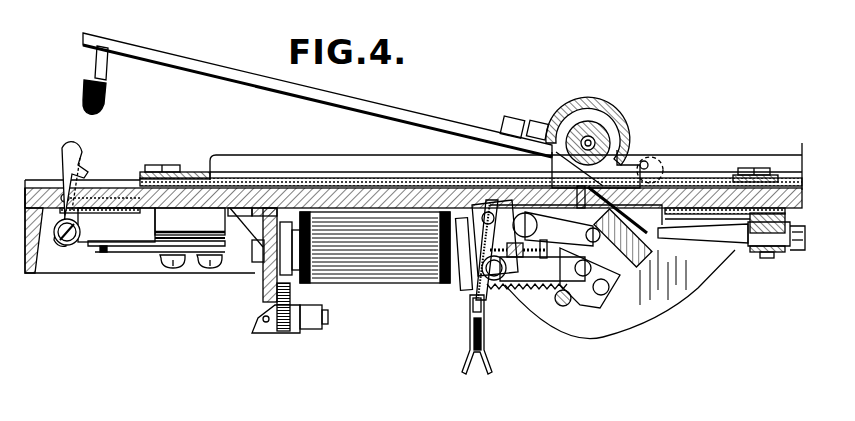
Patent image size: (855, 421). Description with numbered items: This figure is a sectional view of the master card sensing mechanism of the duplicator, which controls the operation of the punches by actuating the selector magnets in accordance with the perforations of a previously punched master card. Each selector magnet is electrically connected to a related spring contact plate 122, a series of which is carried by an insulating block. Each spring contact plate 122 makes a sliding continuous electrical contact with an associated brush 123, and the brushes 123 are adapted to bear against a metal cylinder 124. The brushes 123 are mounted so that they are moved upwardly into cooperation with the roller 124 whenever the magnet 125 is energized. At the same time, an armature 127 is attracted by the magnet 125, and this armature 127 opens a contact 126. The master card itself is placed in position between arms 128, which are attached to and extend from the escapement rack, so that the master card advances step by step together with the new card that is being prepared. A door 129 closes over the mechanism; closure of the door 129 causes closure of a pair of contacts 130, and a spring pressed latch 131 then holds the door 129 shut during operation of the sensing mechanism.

The spring contact plate 122 is at (708, 240).
The brush 123 is at (638, 162).
The metal cylinder 124 is at (622, 132).
The magnet 125 is at (372, 273).
The contact 126 is at (469, 328).
The armature 127 is at (484, 290).
The arms 128 is at (166, 175).
The door 129 is at (247, 80).
The contacts 130 is at (95, 248).
The spring pressed latch 131 is at (76, 158).